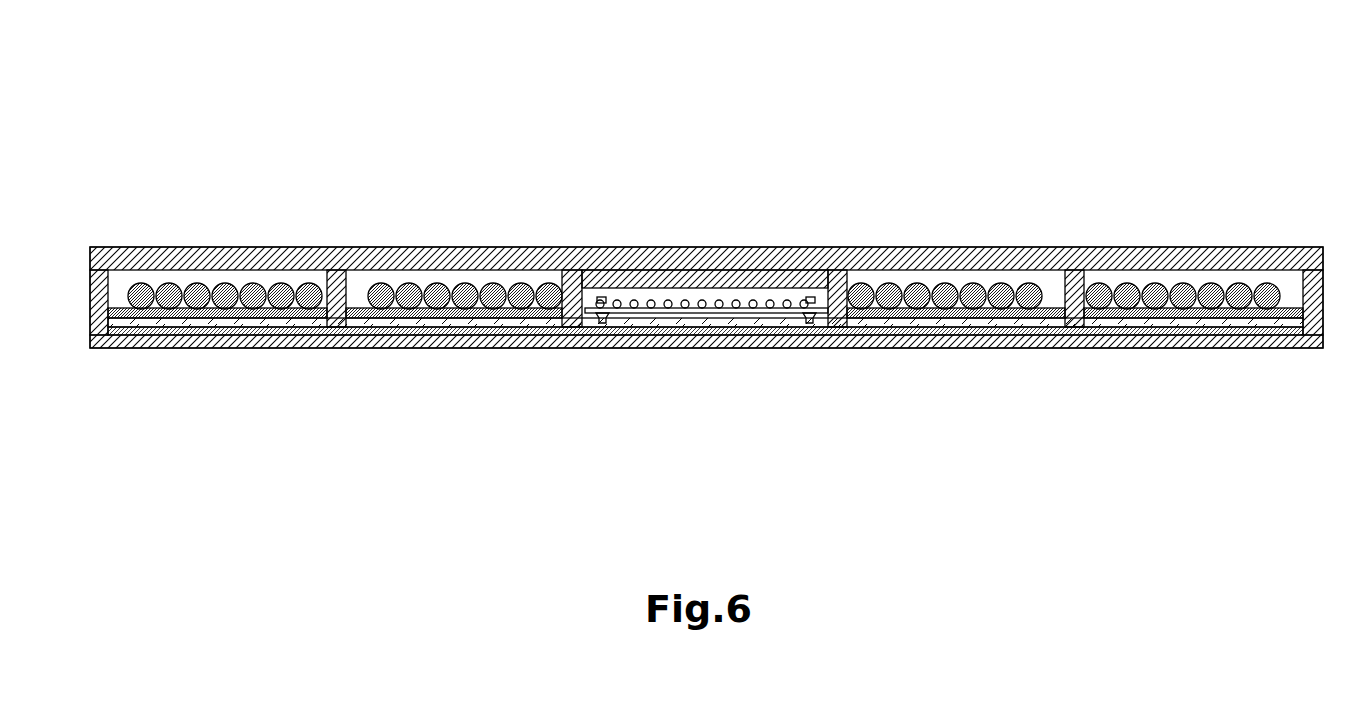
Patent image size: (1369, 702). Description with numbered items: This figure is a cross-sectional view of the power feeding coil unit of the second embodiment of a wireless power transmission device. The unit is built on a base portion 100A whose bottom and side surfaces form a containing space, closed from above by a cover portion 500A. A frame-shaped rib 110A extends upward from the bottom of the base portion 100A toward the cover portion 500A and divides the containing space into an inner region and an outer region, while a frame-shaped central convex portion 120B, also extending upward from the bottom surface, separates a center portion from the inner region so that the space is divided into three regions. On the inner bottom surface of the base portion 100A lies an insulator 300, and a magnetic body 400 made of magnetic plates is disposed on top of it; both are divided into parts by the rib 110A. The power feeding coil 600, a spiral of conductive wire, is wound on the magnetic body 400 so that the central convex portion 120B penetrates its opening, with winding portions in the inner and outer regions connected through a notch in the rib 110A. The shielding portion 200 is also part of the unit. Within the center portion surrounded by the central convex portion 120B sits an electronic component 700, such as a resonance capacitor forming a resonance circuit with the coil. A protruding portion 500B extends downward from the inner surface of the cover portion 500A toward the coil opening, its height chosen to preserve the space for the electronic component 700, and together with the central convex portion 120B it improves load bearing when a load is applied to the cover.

The base portion 100A is at (97, 307).
The rib 110A is at (333, 310).
The central convex portion 120B is at (582, 270).
The shielding portion 200 is at (828, 335).
The insulator 300 is at (519, 310).
The magnetic body 400 is at (273, 320).
The cover portion 500A is at (224, 247).
The protruding portion 500B is at (693, 283).
The power feeding coil 600 is at (373, 283).
The electronic component 700 is at (689, 310).